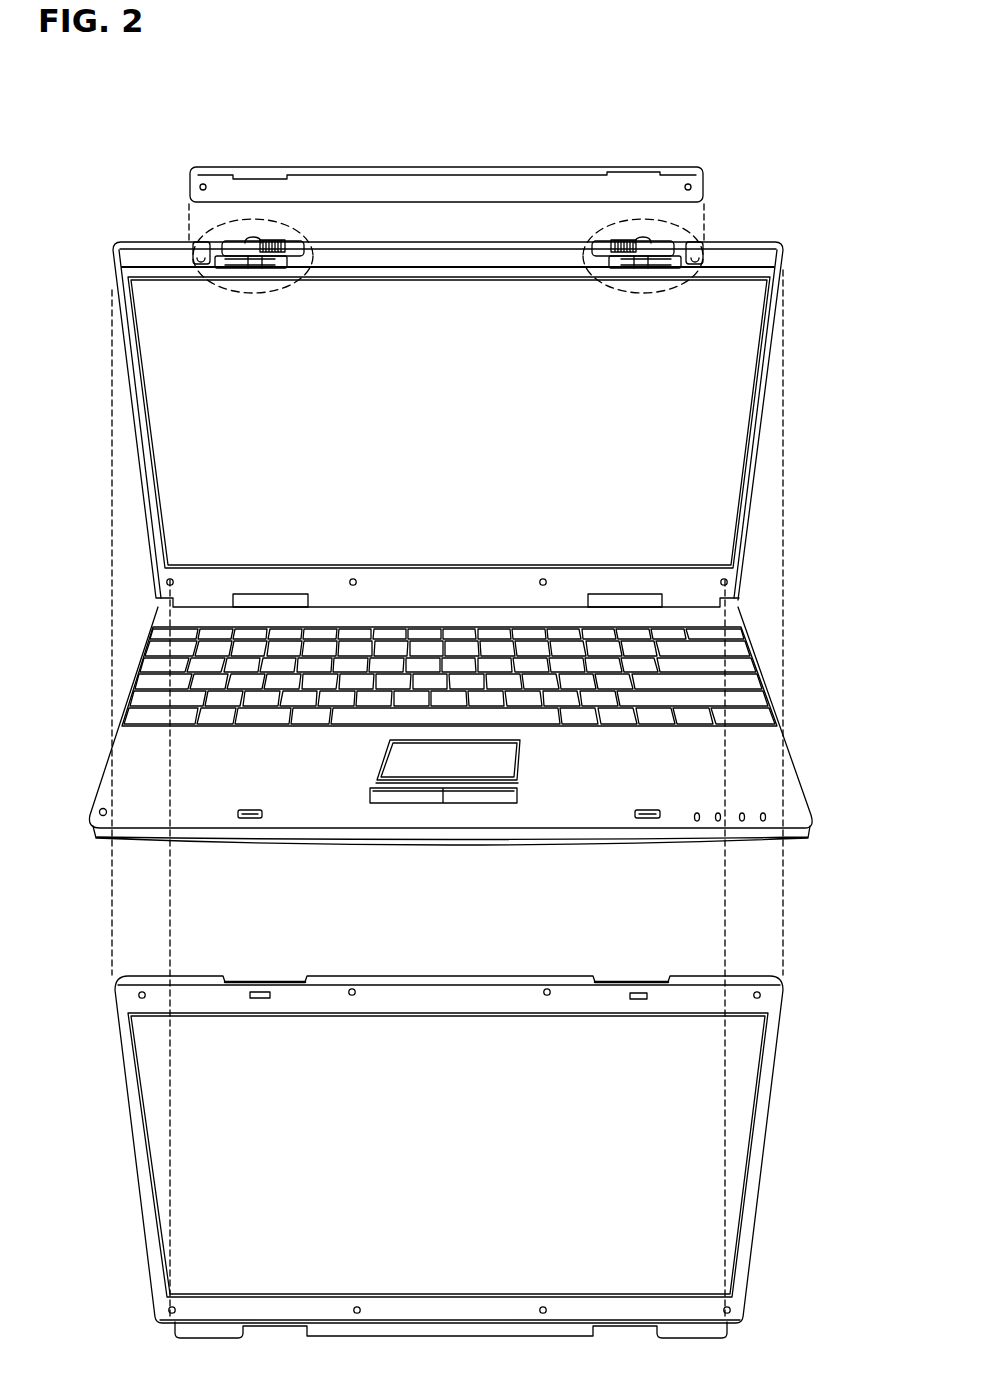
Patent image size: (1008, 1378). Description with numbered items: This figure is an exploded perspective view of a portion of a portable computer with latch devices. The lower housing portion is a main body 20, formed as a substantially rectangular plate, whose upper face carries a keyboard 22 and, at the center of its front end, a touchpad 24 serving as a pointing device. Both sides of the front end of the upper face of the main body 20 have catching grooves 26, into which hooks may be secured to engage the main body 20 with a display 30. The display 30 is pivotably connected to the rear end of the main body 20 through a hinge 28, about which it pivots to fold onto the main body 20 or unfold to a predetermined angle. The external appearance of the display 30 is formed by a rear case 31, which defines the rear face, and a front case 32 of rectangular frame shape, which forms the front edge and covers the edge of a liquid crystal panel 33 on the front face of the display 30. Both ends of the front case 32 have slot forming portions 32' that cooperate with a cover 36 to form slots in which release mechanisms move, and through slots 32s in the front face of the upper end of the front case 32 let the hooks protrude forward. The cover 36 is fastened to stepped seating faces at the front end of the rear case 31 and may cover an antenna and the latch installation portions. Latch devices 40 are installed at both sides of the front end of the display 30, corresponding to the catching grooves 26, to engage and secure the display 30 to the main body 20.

The main body 20 is at (495, 950).
The keyboard 22 is at (745, 683).
The touchpad 24 is at (475, 765).
The catching grooves 26 is at (248, 818).
The hinge 28 is at (235, 600).
The display 30 is at (468, 561).
The rear case 31 is at (776, 242).
The front case 32 is at (462, 1117).
The slot forming portions 32' is at (446, 939).
The through slots 32s is at (250, 995).
The liquid crystal panel 33 is at (735, 425).
The cover 36 is at (420, 190).
The latch devices 40 is at (658, 224).